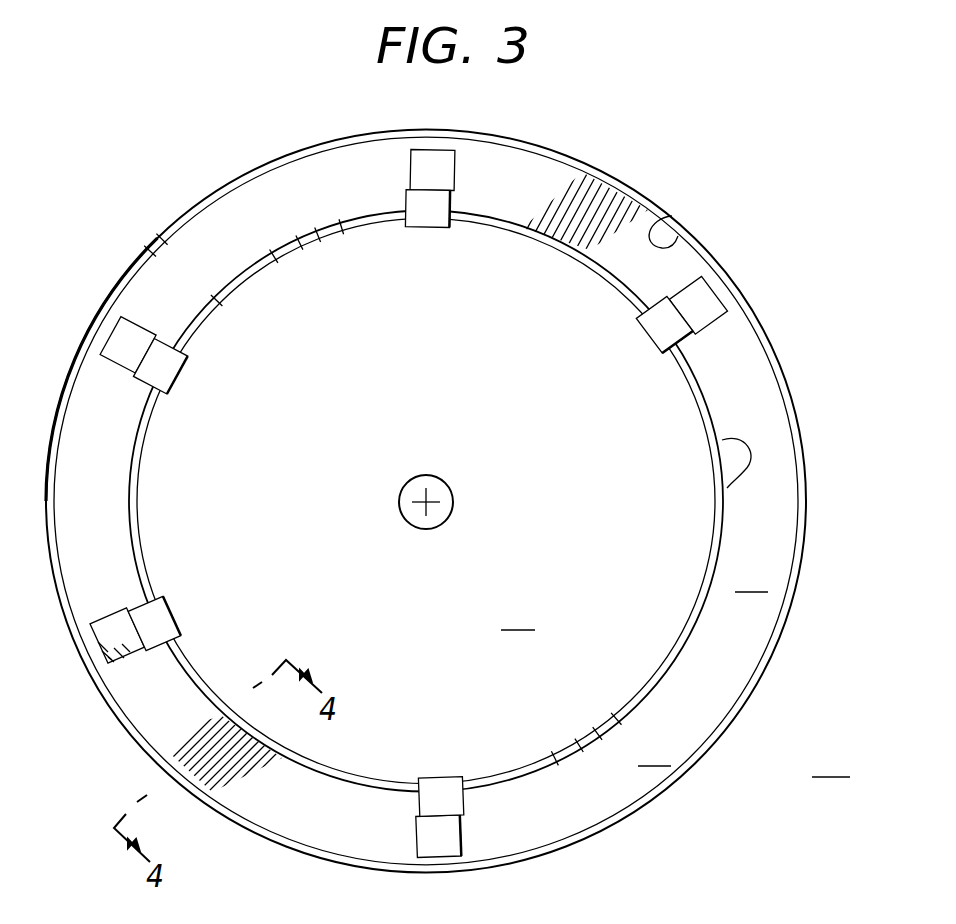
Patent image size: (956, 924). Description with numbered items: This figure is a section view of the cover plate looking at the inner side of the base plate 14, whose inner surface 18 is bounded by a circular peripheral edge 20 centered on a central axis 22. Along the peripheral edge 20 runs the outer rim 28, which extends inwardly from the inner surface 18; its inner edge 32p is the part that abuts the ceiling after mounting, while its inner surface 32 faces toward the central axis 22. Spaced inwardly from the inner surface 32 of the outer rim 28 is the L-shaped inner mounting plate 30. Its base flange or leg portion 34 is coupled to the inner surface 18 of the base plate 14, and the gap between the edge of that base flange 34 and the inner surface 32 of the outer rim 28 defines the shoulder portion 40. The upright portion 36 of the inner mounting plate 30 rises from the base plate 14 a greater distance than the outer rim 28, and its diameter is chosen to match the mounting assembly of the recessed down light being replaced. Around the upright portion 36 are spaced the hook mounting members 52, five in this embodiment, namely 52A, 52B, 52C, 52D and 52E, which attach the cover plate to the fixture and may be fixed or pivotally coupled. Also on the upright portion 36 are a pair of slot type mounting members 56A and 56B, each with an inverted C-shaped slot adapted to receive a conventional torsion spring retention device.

The base plate 14 is at (827, 750).
The inner surface 18 is at (518, 615).
The peripheral edge 20 is at (803, 562).
The central axis 22 is at (426, 502).
The outer rim 28 is at (806, 475).
The inner mounting plate 30 is at (717, 447).
The inner surface of the outer rim 32 is at (650, 218).
The inner edge of the outer rim 32p is at (758, 339).
The base flange or leg portion 34 is at (654, 751).
The upright portion 36 is at (683, 640).
The shoulder portion 40 is at (751, 577).
The hook mounting members 52 is at (472, 822).
The hook mounting member 52A is at (160, 627).
The hook mounting member 52B is at (478, 836).
The hook mounting member 52C is at (648, 333).
The hook mounting member 52D is at (430, 220).
The hook mounting member 52E is at (162, 364).
The slot type mounting member 56A is at (590, 737).
The slot type mounting member 56B is at (310, 243).